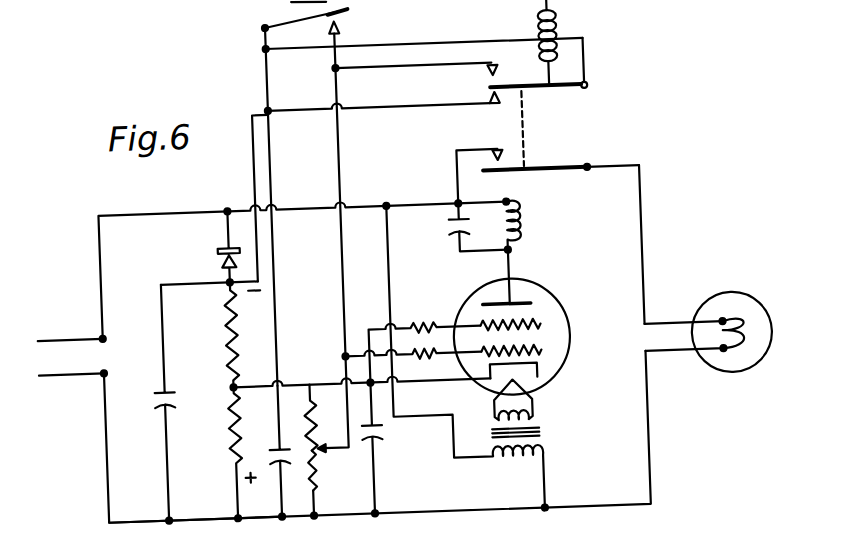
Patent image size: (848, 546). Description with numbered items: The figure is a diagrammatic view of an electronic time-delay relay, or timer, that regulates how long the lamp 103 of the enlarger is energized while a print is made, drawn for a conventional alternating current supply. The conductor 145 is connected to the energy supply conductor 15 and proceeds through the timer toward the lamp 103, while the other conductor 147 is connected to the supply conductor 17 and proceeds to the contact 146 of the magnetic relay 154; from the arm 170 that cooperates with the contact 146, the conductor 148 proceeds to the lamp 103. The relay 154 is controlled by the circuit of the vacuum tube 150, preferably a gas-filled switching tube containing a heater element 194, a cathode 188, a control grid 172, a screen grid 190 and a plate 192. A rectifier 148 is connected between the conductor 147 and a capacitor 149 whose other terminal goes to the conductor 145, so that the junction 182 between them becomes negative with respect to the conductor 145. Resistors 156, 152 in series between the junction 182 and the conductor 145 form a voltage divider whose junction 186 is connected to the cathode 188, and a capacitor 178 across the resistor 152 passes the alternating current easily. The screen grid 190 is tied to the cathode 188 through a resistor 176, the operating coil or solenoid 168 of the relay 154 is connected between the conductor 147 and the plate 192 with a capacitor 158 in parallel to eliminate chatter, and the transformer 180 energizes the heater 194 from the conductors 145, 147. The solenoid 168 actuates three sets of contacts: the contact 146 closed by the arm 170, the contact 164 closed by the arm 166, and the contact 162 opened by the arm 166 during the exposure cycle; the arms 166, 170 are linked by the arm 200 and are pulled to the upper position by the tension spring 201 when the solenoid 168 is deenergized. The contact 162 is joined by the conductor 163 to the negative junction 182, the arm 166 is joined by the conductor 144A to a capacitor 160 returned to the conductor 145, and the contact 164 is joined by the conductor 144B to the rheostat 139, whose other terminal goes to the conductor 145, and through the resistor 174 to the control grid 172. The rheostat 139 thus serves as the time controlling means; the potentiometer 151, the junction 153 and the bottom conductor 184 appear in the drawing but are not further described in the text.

The energy supply conductor 15 is at (28, 369).
The supply conductor 17 is at (37, 333).
The enlarger lamp 103 is at (718, 380).
The rheostat 139 is at (296, 485).
The conductor 144A is at (427, 48).
The conductor 144B is at (336, 165).
The conductor 145 is at (96, 528).
The contact 146 is at (495, 156).
The conductor 147 is at (129, 210).
The rectifier 148 is at (216, 256).
The capacitor 149 is at (147, 410).
The vacuum tube 150 is at (547, 309).
The potentiometer 151 is at (329, 415).
The resistor 152 is at (215, 442).
The conductor 153 is at (296, 509).
The magnetic relay 154 is at (504, 172).
The resistor 156 is at (215, 344).
The capacitor 158 is at (448, 219).
The capacitor 160 is at (262, 466).
The contact 162 is at (486, 103).
The conductor 163 is at (248, 159).
The contact 164 is at (486, 76).
The arm 166 is at (514, 57).
The operating coil or solenoid 168 is at (511, 221).
The arm 170 is at (541, 177).
The control grid 172 is at (532, 358).
The resistor 174 is at (413, 361).
The resistor 176 is at (407, 330).
The capacitor 178 is at (349, 441).
The transformer 180 is at (527, 444).
The junction 182 is at (219, 280).
The conductor 184 is at (153, 522).
The junction 186 is at (217, 385).
The cathode 188 is at (526, 383).
The screen grid 190 is at (533, 332).
The plate 192 is at (508, 306).
The heater element 194 is at (484, 396).
The arm 200 is at (528, 107).
The tension spring 201 is at (557, 32).